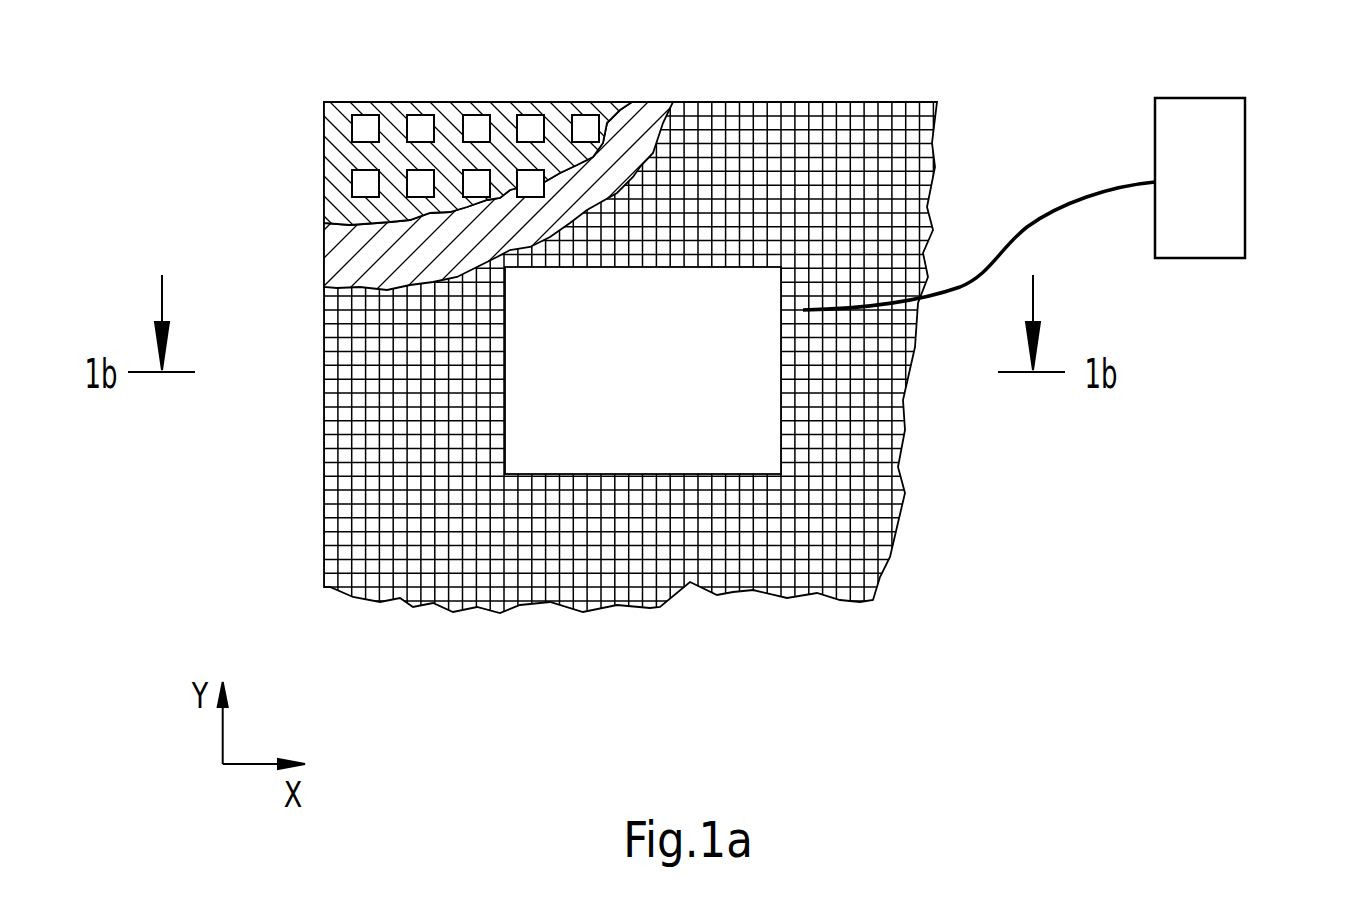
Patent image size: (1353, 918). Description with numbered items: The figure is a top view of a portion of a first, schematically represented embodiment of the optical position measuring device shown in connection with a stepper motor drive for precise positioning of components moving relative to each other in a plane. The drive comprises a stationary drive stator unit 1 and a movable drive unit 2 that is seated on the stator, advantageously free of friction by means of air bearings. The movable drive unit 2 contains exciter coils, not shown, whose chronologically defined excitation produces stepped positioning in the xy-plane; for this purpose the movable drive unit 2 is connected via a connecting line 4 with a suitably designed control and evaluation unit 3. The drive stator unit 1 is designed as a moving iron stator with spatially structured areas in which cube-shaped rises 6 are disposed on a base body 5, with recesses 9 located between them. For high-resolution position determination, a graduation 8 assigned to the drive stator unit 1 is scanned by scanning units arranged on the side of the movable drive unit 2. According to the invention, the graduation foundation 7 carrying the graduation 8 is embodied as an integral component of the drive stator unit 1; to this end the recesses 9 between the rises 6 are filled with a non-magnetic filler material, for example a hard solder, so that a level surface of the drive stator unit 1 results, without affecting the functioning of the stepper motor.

The drive stator unit 1 is at (285, 490).
The movable drive unit 2 is at (733, 457).
The control and evaluation unit 3 is at (1240, 132).
The connecting line 4 is at (1073, 208).
The base body 5 is at (475, 123).
The cube-shaped rises 6 is at (423, 120).
The graduation foundation 7 is at (635, 110).
The graduation 8 is at (884, 110).
The recesses 9 is at (558, 120).